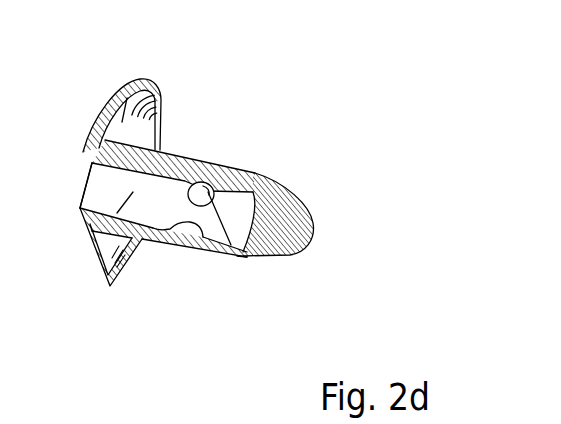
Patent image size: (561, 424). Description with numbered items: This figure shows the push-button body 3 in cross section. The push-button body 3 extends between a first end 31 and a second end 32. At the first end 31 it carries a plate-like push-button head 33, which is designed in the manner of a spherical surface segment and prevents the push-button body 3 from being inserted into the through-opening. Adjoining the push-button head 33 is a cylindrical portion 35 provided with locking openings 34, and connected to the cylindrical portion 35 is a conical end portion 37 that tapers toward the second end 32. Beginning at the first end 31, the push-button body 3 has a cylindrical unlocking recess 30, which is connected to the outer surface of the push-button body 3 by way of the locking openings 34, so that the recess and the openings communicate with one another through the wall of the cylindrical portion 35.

The push-button body 3 is at (235, 135).
The cylindrical unlocking recess 30 is at (88, 248).
The first end 31 is at (80, 208).
The second end 32 is at (309, 242).
The push-button head 33 is at (118, 80).
The locking openings 34 is at (187, 242).
The cylindrical portion 35 is at (172, 155).
The conical end portion 37 is at (287, 188).